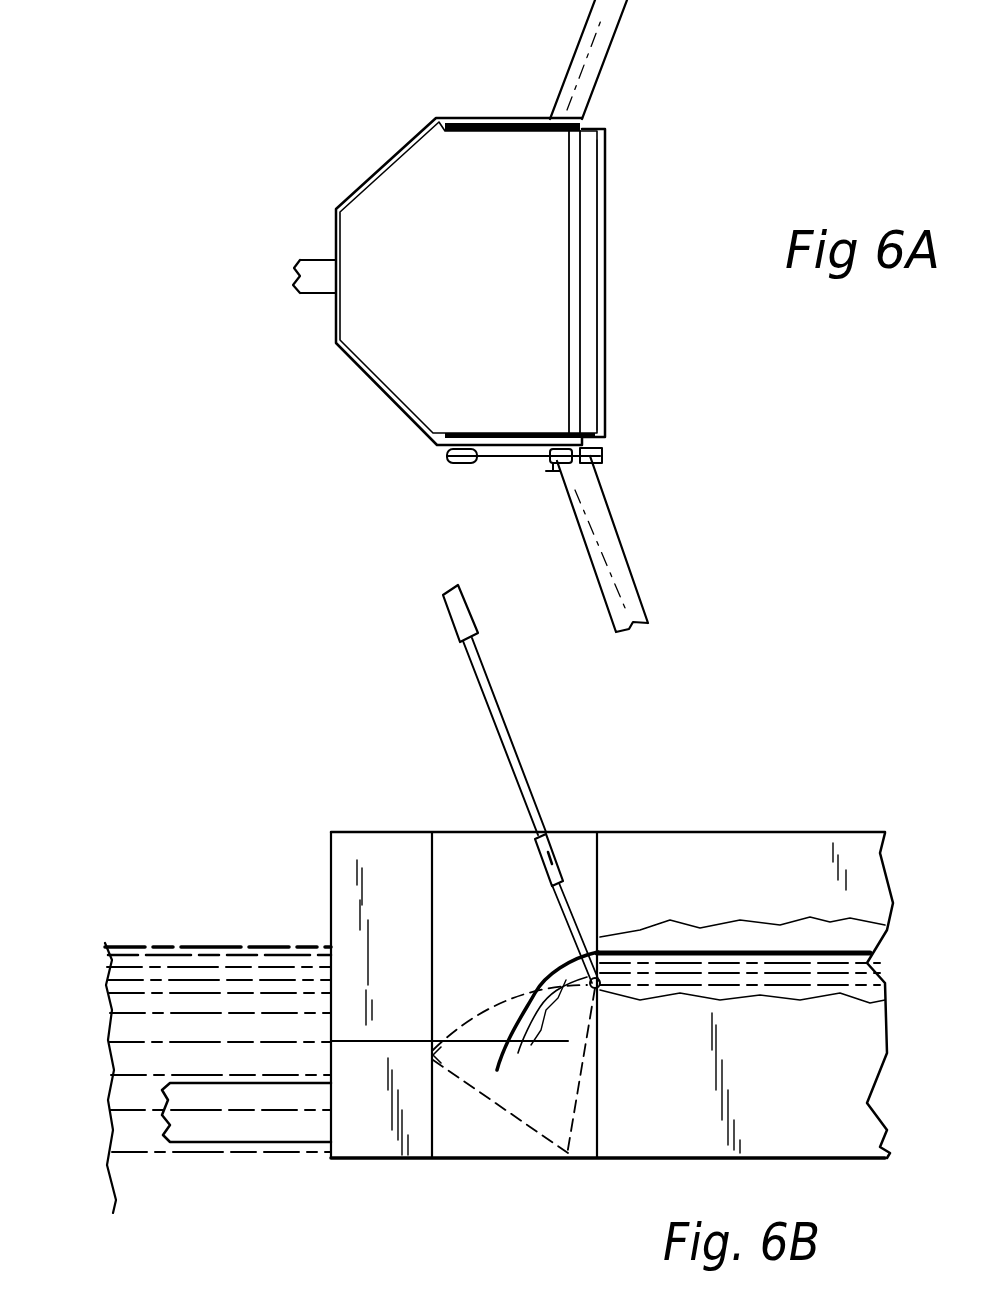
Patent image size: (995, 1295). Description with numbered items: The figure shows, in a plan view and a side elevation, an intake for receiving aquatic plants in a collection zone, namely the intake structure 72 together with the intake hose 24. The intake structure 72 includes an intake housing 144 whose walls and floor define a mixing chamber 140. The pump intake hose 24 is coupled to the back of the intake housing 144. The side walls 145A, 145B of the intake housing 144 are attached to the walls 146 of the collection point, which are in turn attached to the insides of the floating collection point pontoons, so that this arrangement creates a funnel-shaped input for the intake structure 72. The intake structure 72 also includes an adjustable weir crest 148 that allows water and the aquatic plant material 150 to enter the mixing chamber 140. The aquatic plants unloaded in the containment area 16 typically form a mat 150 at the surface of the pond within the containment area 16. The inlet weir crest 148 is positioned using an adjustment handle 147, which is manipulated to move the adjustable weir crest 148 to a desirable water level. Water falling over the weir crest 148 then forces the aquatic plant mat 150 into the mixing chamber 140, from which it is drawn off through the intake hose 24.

In FIG. 6A, the containment area 16 is at (723, 452).
In FIG. 6B, the containment area 16 is at (815, 1067).
In FIG. 6A, the intake hose 24 is at (312, 272).
In FIG. 6B, the intake hose 24 is at (255, 1128).
In FIG. 6A, the intake structure 72 is at (300, 174).
In FIG. 6B, the intake structure 72 is at (485, 1175).
In FIG. 6A, the mixing chamber 140 is at (540, 303).
In FIG. 6B, the mixing chamber 140 is at (477, 1058).
In FIG. 6A, the intake housing 144 is at (400, 138).
In FIG. 6B, the intake housing 144 is at (452, 830).
In FIG. 6A, the side wall 145A is at (518, 118).
In FIG. 6A, the side wall 145B is at (518, 452).
In FIG. 6A, the walls of collection point 146 is at (600, 30).
In FIG. 6A, the adjustment handle 147 is at (487, 458).
In FIG. 6B, the adjustment handle 147 is at (505, 717).
In FIG. 6A, the adjustable weir crest 148 is at (605, 377).
In FIG. 6B, the adjustable weir crest 148 is at (590, 1053).
In FIG. 6B, the aquatic plant mat 150 is at (723, 937).